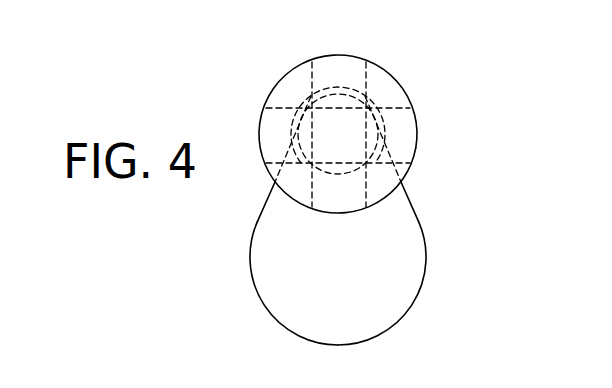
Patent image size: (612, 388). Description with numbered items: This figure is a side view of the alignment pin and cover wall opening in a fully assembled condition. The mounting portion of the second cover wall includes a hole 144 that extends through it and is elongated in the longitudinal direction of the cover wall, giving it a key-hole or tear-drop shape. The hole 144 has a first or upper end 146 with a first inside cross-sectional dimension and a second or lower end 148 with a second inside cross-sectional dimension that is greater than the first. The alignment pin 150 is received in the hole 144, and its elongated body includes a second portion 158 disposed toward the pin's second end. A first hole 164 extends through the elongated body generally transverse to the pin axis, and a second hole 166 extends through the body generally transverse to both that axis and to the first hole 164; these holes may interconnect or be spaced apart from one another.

The hole 144 is at (427, 262).
The upper end 146 is at (337, 88).
The lower end 148 is at (403, 317).
The alignment pin 150 is at (409, 87).
The second portion 158 is at (405, 170).
The first hole 164 is at (312, 178).
The second hole 166 is at (283, 107).